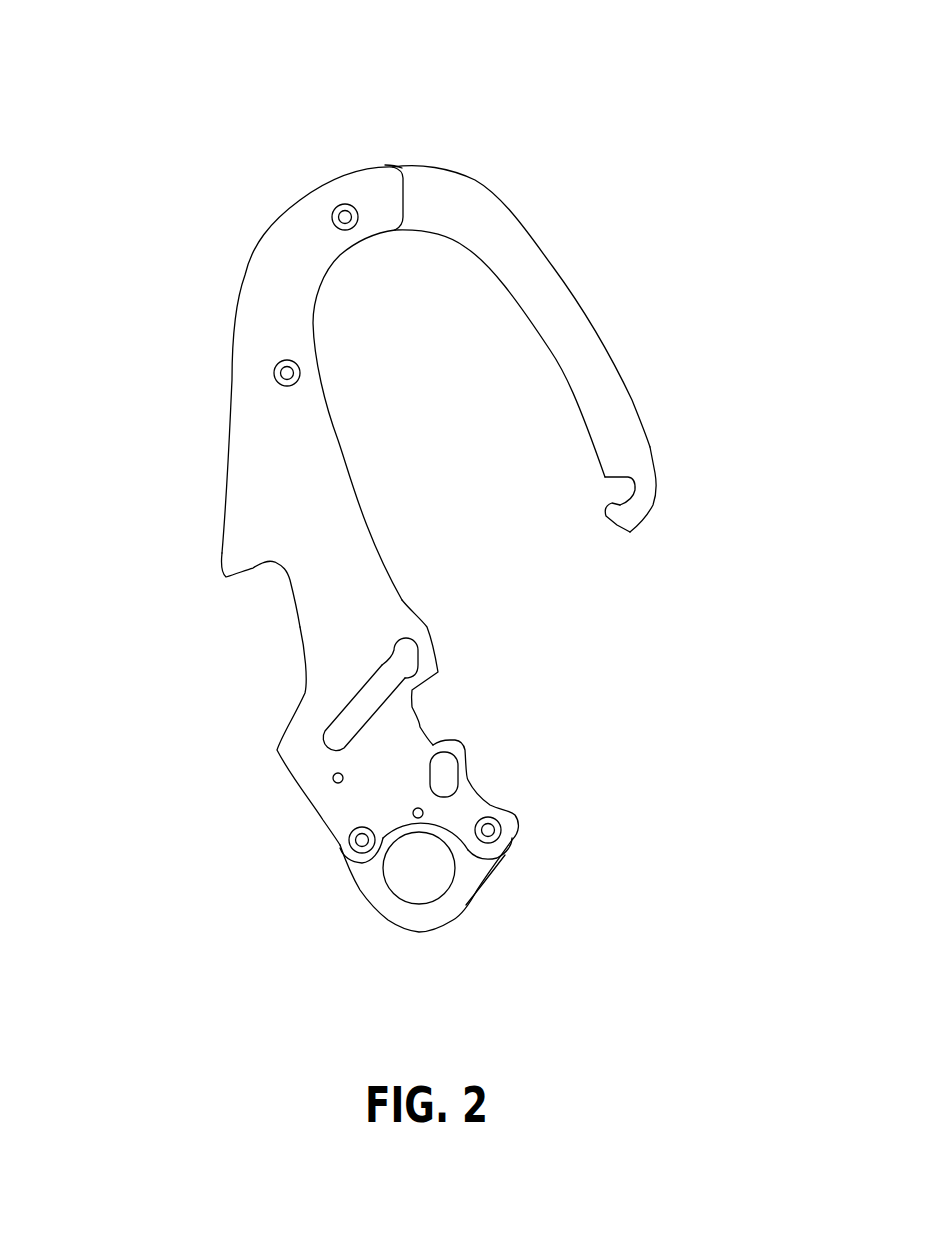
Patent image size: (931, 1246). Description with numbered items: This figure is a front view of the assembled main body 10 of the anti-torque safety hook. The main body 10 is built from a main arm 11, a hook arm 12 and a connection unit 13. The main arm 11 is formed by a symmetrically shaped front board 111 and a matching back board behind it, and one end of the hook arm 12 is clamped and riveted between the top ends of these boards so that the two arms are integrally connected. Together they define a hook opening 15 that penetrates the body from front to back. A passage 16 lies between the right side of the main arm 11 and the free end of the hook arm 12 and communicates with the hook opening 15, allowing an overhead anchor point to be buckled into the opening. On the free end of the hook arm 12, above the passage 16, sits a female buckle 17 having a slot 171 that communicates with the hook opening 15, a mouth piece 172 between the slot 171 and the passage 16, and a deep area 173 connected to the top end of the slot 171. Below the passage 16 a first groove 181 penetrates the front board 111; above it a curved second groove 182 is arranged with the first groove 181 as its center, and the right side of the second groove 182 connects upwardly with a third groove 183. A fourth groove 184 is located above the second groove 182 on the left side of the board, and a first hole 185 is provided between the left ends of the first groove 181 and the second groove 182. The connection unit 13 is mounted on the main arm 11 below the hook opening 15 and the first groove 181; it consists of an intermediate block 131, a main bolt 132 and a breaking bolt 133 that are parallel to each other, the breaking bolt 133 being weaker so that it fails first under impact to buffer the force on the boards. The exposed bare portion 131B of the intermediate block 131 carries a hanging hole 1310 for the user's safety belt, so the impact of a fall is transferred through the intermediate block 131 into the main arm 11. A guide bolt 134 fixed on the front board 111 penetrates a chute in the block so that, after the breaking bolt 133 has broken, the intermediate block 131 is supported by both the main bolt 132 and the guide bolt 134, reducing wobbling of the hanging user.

The main body 10 is at (408, 122).
The main arm 11 is at (208, 310).
The front board 111 is at (255, 437).
The hook arm 12 is at (542, 275).
The connection unit 13 is at (490, 941).
The intermediate block 131 is at (375, 914).
The bare portion 131B is at (468, 884).
The hanging hole 1310 is at (422, 883).
The main bolt 132 is at (488, 832).
The breaking bolt 133 is at (419, 807).
The guide bolt 134 is at (362, 840).
The hook opening 15 is at (483, 387).
The passage 16 is at (572, 592).
The female buckle 17 is at (622, 470).
The slot 171 is at (612, 467).
The mouth piece 172 is at (620, 530).
The deep area 173 is at (635, 447).
The first groove 181 is at (445, 778).
The second groove 182 is at (348, 708).
The third groove 183 is at (407, 643).
The fourth groove 184 is at (255, 570).
The first hole 185 is at (333, 773).